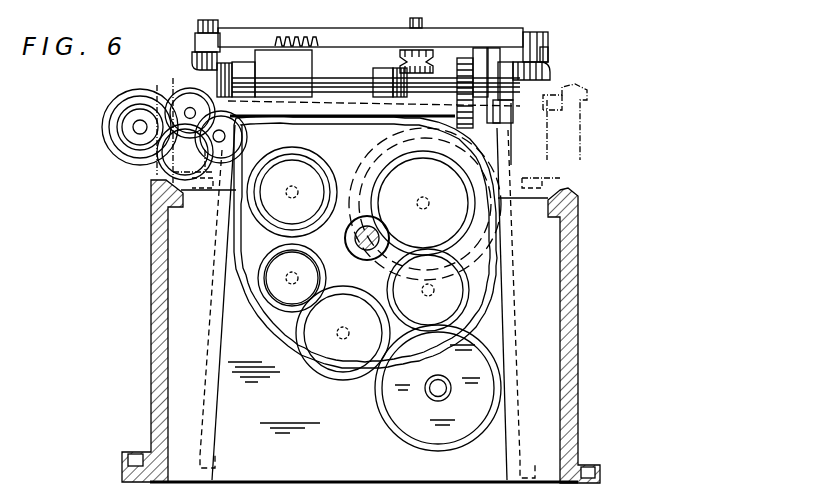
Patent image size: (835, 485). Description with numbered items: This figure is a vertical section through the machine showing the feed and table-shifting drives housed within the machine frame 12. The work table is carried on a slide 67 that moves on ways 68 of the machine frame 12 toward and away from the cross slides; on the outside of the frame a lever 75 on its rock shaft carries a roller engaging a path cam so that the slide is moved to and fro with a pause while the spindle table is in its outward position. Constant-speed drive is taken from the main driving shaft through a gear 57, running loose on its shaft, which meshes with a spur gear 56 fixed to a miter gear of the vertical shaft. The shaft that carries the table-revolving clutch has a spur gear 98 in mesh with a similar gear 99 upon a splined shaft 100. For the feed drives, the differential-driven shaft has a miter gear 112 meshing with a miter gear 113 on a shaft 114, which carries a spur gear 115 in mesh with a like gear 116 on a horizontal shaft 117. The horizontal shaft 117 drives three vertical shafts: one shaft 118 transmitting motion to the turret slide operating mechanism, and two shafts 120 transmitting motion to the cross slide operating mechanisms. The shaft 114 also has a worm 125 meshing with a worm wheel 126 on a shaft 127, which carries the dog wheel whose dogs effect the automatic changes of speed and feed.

The machine frame 12 is at (361, 331).
The spur gear 56 is at (103, 160).
The gear 57 is at (298, 82).
The slide 67 is at (580, 162).
The ways 68 is at (160, 190).
The lever 75 is at (232, 0).
The spur gear 98 is at (188, 92).
The gear 99 is at (117, 124).
The shaft 100 is at (133, 125).
The miter gear 112 is at (268, 88).
The miter gear 113 is at (318, 100).
The shaft 114 is at (308, 115).
The spur gear 115 is at (508, 134).
The gear 116 is at (468, 67).
The horizontal shaft 117 is at (442, 83).
The vertical shaft 118 is at (405, 15).
The vertical shafts 120 is at (202, 29).
The worm 125 is at (380, 92).
The worm wheel 126 is at (270, 328).
The shaft 127 is at (384, 238).